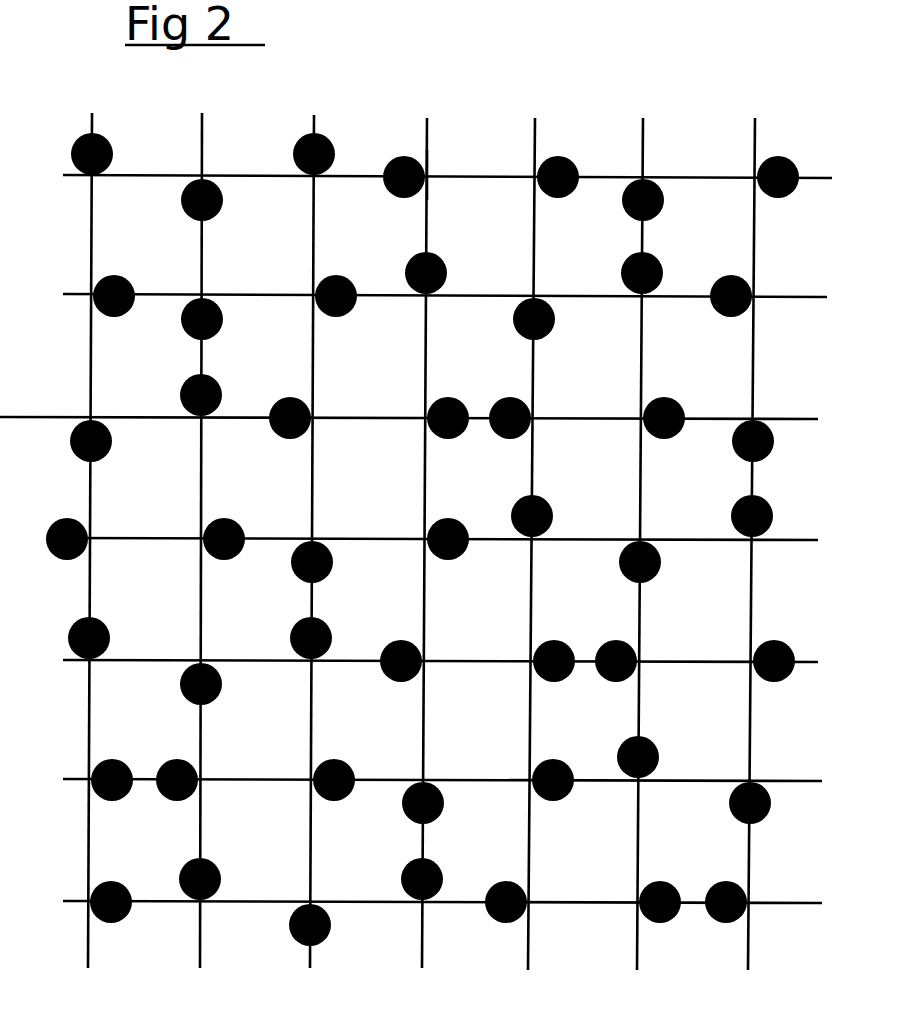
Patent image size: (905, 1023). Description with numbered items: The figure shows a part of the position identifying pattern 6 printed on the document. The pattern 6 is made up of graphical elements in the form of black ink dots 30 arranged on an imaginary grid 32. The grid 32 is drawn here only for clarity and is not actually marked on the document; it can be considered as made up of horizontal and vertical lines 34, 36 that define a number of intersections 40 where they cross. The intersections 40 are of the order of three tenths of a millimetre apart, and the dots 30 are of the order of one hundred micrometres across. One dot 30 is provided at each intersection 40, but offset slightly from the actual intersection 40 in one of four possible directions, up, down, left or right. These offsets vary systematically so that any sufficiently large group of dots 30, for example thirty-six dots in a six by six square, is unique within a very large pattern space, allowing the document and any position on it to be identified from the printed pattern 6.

The position identifying pattern 6 is at (430, 113).
The black ink dot 30 is at (430, 168).
The imaginary grid 32 is at (537, 140).
The horizontal line 34 is at (697, 175).
The vertical line 36 is at (647, 140).
The intersection 40 is at (533, 181).